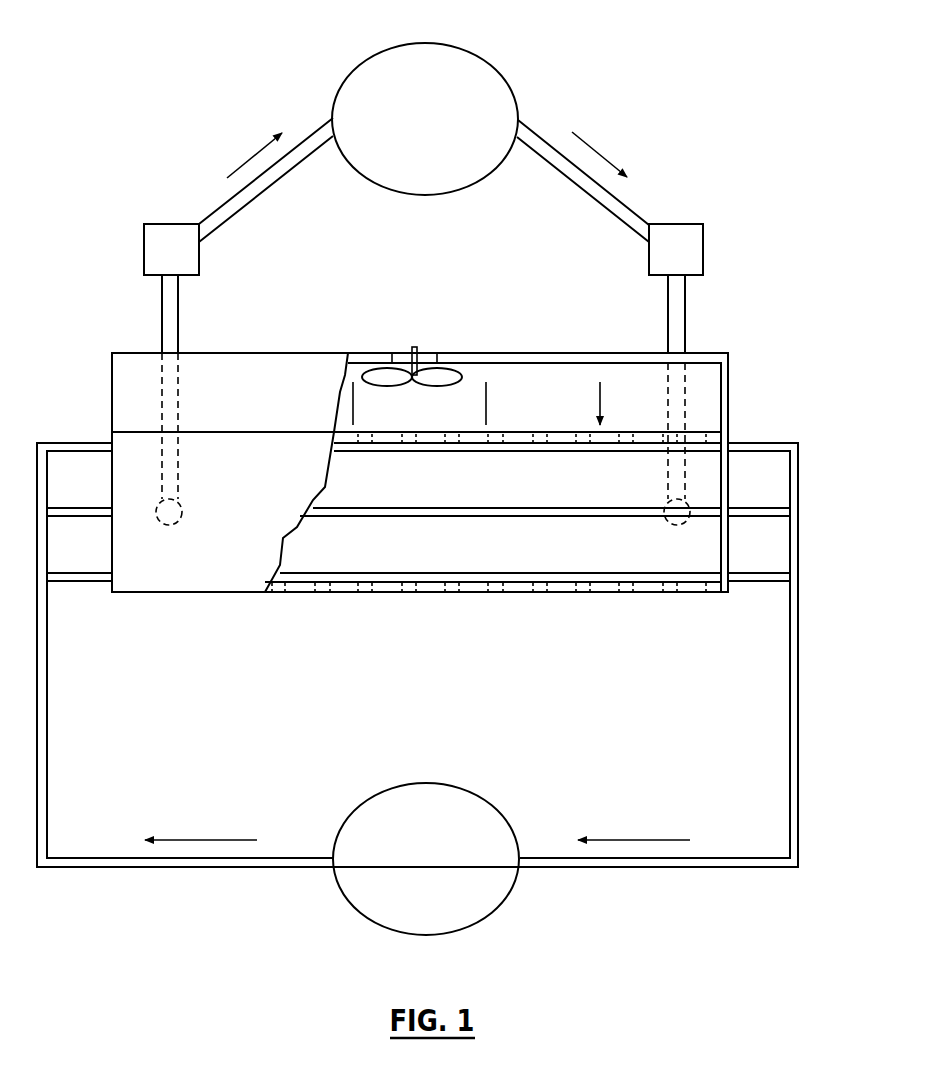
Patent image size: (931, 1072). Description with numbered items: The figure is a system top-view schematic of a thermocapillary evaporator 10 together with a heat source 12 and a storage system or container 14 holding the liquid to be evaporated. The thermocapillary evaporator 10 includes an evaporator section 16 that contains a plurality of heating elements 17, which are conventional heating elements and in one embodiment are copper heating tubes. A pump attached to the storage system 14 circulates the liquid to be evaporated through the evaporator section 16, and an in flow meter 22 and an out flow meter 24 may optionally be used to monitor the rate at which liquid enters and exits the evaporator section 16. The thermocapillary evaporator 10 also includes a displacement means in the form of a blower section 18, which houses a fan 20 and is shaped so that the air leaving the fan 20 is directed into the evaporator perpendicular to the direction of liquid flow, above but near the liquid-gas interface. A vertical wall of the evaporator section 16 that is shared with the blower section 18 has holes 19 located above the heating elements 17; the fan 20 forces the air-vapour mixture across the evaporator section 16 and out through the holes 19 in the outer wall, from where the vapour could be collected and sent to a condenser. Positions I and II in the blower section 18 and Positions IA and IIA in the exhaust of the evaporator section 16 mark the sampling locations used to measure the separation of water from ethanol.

The thermocapillary evaporator 10 is at (739, 122).
The heat source 12 is at (480, 803).
The storage system or container 14 is at (493, 93).
The evaporator section 16 is at (730, 434).
The heating elements 17 is at (70, 572).
The blower section 18 is at (730, 354).
The holes 19 is at (405, 592).
The fan 20 is at (445, 375).
The in flow meter 22 is at (659, 272).
The out flow meter 24 is at (148, 275).